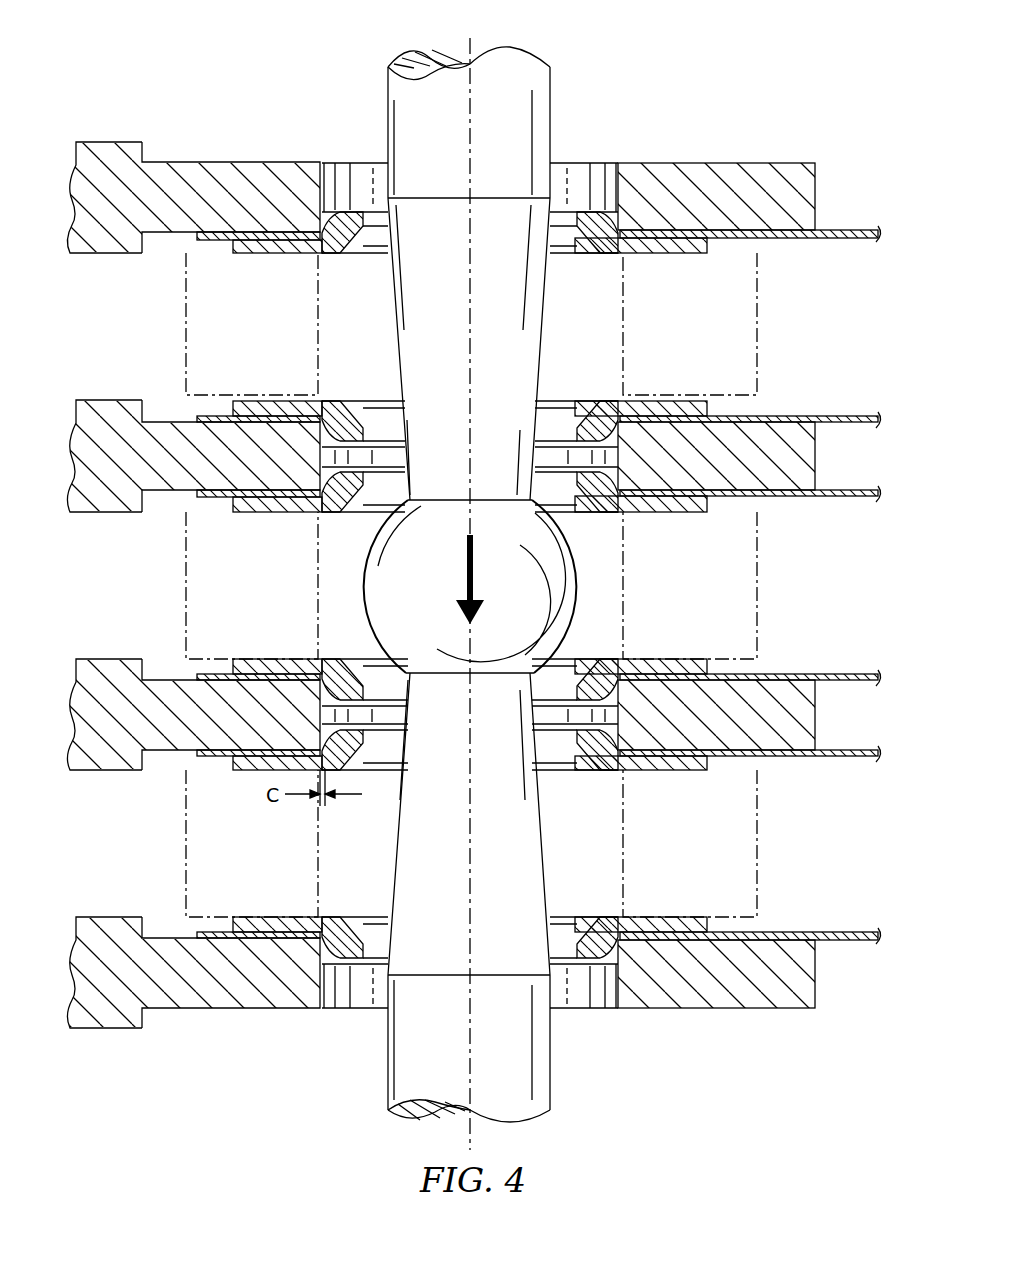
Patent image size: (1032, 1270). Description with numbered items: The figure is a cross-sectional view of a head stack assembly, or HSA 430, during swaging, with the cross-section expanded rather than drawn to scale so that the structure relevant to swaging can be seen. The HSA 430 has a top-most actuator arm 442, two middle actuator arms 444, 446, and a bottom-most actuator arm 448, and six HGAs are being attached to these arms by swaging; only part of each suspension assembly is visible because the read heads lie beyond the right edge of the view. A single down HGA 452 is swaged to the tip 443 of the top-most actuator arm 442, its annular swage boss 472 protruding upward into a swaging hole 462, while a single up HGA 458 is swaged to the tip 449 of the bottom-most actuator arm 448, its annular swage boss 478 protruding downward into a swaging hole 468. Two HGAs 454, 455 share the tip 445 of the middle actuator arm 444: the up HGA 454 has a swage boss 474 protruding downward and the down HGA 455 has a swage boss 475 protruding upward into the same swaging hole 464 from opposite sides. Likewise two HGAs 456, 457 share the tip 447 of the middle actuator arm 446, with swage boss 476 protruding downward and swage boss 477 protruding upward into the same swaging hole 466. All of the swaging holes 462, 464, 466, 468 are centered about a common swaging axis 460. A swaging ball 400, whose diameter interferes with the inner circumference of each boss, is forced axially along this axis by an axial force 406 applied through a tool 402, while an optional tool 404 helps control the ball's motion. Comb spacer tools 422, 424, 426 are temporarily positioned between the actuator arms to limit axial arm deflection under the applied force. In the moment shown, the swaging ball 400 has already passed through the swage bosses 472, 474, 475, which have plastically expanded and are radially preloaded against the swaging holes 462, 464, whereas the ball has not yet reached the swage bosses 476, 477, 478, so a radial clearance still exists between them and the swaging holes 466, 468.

The swaging ball 400 is at (430, 617).
The tool 402 is at (388, 92).
The optional tool 404 is at (388, 1090).
The axial force 406 is at (466, 560).
The comb spacer tool 422 is at (757, 325).
The comb spacer tool 424 is at (757, 584).
The comb spacer tool 426 is at (757, 842).
The HSA 430 is at (228, 46).
The top-most actuator arm 442 is at (120, 163).
The tip 443 is at (216, 185).
The middle actuator arm 444 is at (120, 420).
The tip 445 is at (183, 458).
The middle actuator arm 446 is at (120, 680).
The tip 447 is at (183, 718).
The bottom-most actuator arm 448 is at (120, 938).
The tip 449 is at (198, 990).
The HGA 452 is at (840, 228).
The HGA 454 is at (842, 414).
The HGA 455 is at (842, 498).
The HGA 456 is at (840, 672).
The HGA 457 is at (842, 758).
The HGA 458 is at (840, 930).
The swaging axis 460 is at (470, 152).
The swaging hole 462 is at (600, 180).
The swaging hole 464 is at (553, 455).
The swaging hole 466 is at (552, 710).
The swaging hole 468 is at (590, 990).
The annular swage boss 472 is at (590, 236).
The annular swage boss 474 is at (590, 413).
The annular swage boss 475 is at (592, 498).
The annular swage boss 476 is at (596, 676).
The annular swage boss 477 is at (590, 757).
The annular swage boss 478 is at (590, 930).